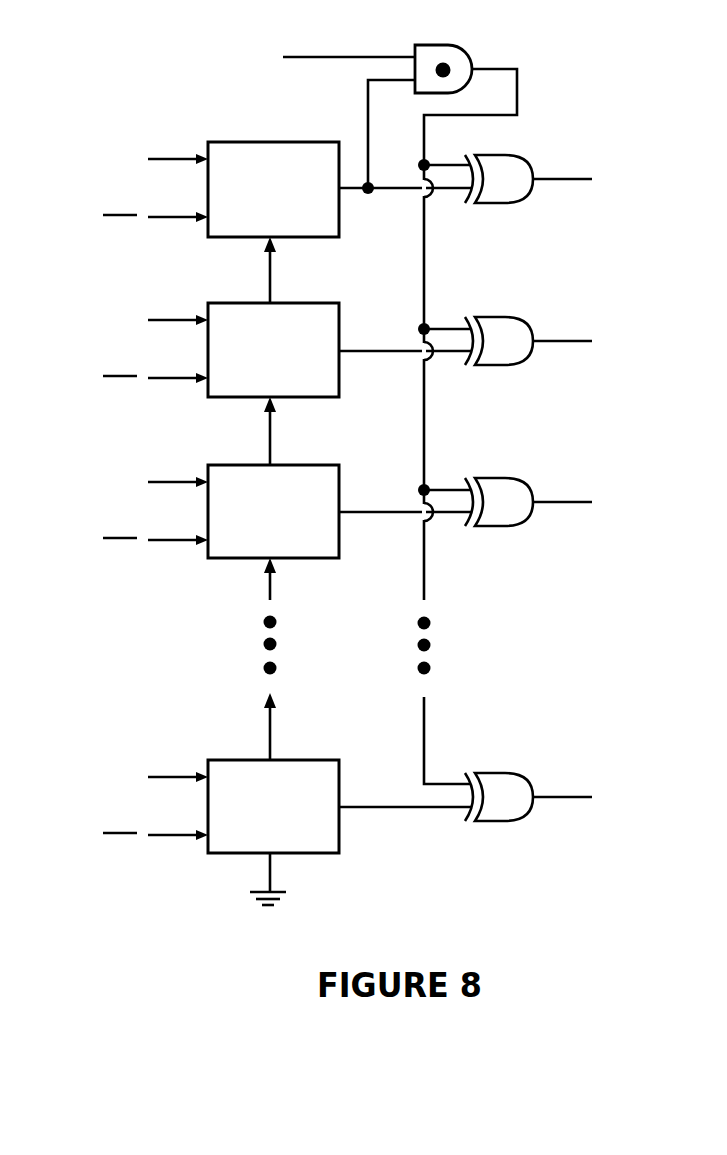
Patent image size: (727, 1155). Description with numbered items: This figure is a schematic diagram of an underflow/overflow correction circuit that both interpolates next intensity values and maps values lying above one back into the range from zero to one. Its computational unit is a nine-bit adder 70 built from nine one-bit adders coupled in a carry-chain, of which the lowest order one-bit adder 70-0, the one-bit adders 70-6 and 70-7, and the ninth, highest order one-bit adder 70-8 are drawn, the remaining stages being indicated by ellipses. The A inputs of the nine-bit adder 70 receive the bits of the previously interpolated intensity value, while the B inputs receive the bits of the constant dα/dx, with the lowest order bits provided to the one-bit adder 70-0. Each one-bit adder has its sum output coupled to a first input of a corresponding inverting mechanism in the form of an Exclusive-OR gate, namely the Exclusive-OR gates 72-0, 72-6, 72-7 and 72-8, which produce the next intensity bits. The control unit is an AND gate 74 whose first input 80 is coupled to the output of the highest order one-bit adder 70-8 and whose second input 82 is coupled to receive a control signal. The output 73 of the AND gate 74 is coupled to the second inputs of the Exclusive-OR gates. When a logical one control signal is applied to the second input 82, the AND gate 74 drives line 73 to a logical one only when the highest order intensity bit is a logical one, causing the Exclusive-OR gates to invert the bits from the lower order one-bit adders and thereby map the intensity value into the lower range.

The nine-bit adder 70 is at (131, 117).
The one-bit adder 70-8 is at (214, 142).
The one-bit adder 70-7 is at (214, 303).
The one-bit adder 70-6 is at (214, 465).
The one-bit adder 70-0 is at (214, 760).
The Exclusive-OR gate 72-8 is at (518, 155).
The Exclusive-OR gate 72-7 is at (516, 317).
The Exclusive-OR gate 72-6 is at (516, 478).
The Exclusive-OR gate 72-0 is at (518, 773).
The output of the AND gate 73 is at (493, 68).
The AND gate 74 is at (437, 45).
The first input of the AND gate 80 is at (367, 115).
The second input of the AND gate 82 is at (330, 56).